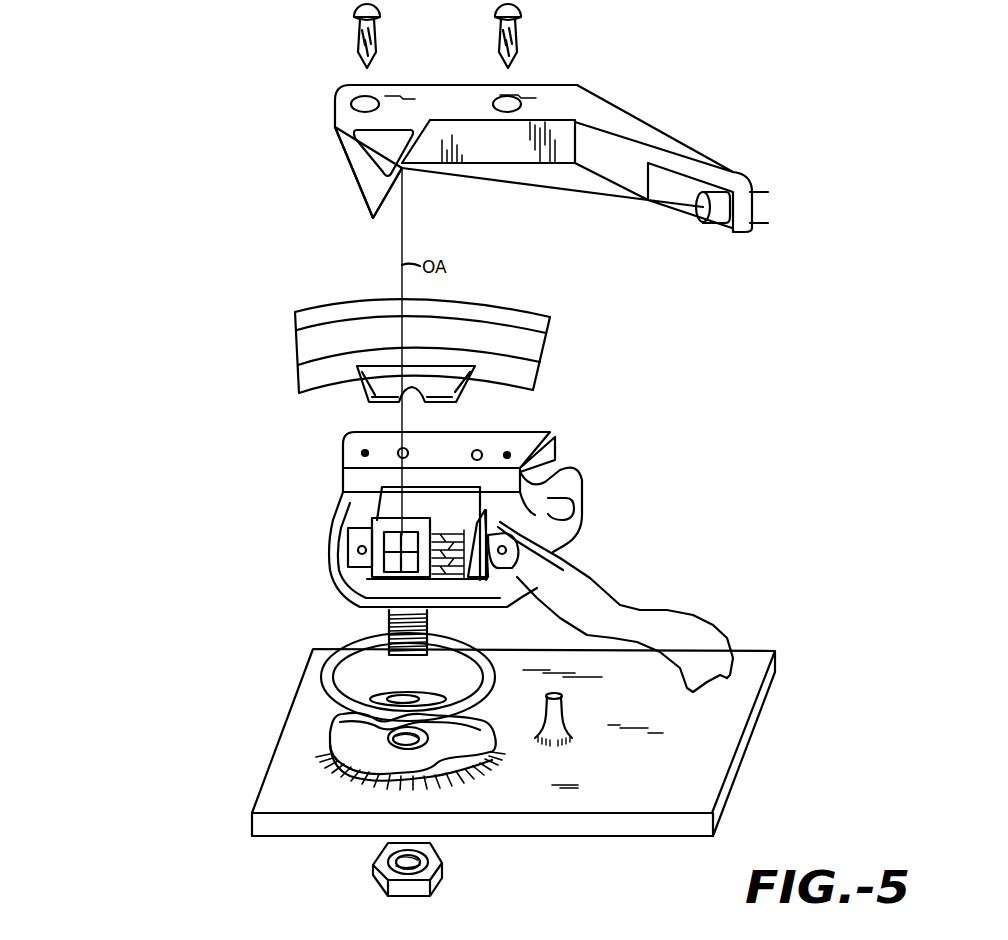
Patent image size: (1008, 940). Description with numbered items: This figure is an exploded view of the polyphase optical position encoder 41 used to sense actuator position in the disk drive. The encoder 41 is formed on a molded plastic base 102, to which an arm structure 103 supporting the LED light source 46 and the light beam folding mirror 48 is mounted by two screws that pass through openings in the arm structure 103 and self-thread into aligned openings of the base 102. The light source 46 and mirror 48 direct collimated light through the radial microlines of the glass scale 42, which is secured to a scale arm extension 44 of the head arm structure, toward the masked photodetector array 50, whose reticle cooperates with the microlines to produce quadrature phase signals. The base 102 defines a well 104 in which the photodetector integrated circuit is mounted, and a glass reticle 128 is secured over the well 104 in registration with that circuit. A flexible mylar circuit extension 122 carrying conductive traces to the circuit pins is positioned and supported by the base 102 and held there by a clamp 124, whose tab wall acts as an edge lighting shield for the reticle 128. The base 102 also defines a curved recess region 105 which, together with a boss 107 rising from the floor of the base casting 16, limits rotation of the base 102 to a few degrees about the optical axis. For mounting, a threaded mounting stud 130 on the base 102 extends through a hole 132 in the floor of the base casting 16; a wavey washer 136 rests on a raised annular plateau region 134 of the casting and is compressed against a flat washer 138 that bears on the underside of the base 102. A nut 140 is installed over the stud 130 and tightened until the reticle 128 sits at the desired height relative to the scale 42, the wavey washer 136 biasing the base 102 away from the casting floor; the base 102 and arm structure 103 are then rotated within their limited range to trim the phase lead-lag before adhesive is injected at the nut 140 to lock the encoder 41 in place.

The base casting 16 is at (718, 786).
The polyphase optical position encoder 41 is at (178, 625).
The glass scale 42 is at (532, 342).
The scale arm extension 44 is at (456, 385).
The light source 46 is at (715, 217).
The light beam folding mirror 48 is at (397, 187).
The photodetector array 50 is at (622, 472).
The molded plastic base 102 is at (333, 567).
The arm structure 103 is at (445, 93).
The well 104 is at (358, 528).
The curved recess region 105 is at (560, 518).
The boss 107 is at (555, 710).
The flexible mylar circuit extension 122 is at (610, 612).
The clamp 124 is at (503, 518).
The glass reticle 128 is at (380, 503).
The threaded mounting stud 130 is at (390, 628).
The hole 132 is at (477, 722).
The raised annular plateau region 134 is at (350, 762).
The wavey washer 136 is at (473, 752).
The flat washer 138 is at (475, 655).
The nut 140 is at (440, 875).